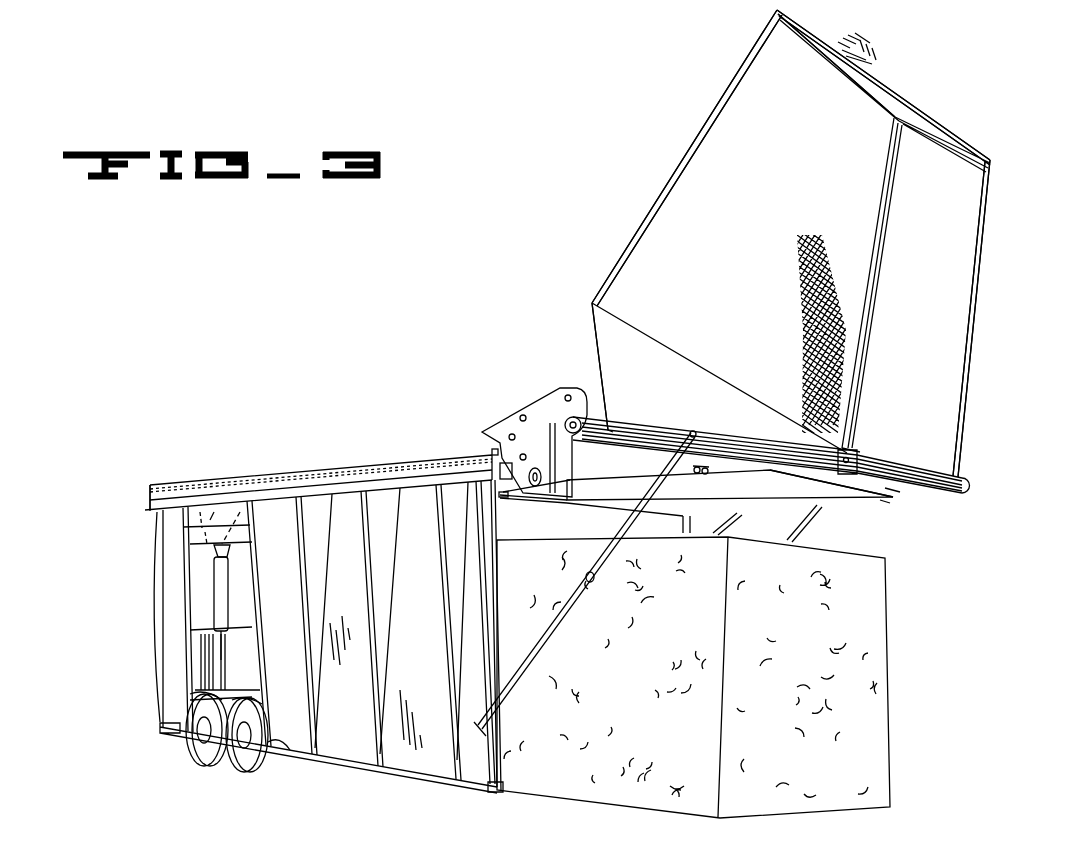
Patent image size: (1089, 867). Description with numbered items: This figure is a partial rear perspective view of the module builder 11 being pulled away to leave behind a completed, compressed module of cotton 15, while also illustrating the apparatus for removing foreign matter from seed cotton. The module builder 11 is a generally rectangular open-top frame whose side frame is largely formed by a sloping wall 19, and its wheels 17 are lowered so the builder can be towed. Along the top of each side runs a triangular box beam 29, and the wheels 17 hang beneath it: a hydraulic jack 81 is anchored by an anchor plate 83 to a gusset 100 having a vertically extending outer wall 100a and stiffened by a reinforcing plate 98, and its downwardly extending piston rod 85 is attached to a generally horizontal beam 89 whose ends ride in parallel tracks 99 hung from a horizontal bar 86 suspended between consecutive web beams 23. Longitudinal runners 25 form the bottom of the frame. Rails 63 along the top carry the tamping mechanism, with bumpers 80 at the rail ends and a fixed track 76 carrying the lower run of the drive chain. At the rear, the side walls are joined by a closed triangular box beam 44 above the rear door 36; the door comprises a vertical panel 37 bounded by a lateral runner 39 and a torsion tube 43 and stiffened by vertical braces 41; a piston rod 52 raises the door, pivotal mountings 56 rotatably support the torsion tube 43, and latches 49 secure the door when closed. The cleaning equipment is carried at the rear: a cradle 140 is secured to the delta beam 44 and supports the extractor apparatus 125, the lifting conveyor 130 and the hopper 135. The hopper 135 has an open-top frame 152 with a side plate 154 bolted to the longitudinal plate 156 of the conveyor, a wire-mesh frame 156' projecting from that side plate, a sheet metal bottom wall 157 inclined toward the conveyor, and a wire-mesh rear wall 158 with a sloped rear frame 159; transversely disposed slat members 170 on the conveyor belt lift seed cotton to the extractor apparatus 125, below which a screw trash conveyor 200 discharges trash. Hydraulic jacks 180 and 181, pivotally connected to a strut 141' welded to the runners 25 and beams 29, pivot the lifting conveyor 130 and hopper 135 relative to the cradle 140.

The module builder 11 is at (137, 450).
The compressed module of cotton 15 is at (612, 667).
The wheels 17 is at (245, 757).
The wall 19 is at (170, 636).
The web beams 23 is at (188, 593).
The longitudinal runners 25 is at (166, 731).
The triangular box beam 29 is at (152, 494).
The rear door 36 is at (873, 515).
The vertical panel 37 is at (840, 500).
The lateral runner 39 is at (885, 493).
The vertical braces 41 is at (684, 472).
The torsion tube 43 is at (663, 515).
The closed triangular box beam 44 is at (500, 465).
The latches 49 is at (705, 466).
The piston rod 52 is at (735, 520).
The pivotal mounting 56 is at (507, 505).
The rails 63 is at (304, 484).
The fixed track 76 is at (152, 508).
The bumpers 80 is at (494, 449).
The hydraulic jack 81 is at (216, 571).
The anchor plate 83 is at (198, 543).
The piston rod 85 is at (222, 673).
The horizontal bar 86 is at (200, 628).
The horizontal beam 89 is at (196, 703).
The reinforcing plate 98 is at (203, 512).
The parallel tracks 99 is at (204, 656).
The gussets 100 is at (240, 512).
The outer wall 100a is at (190, 525).
The extractor apparatus 125 is at (527, 392).
The lifting conveyor 130 is at (973, 499).
The hopper 135 is at (665, 150).
The cradle 140 is at (568, 497).
The strut 141' is at (525, 636).
The open-top frame 152 is at (990, 194).
The side plate 154 is at (641, 342).
The longitudinal plate 156 is at (772, 442).
The frame with wire mesh side walls 156' is at (687, 158).
The bottom wall 157 is at (955, 318).
The rear wall 158 is at (893, 92).
The rear frame 159 is at (930, 103).
The transversely disposed members 170 is at (925, 490).
The hydraulic jack 180 is at (552, 667).
The hydraulic jack 181 is at (818, 526).
The screw trash conveyor 200 is at (562, 481).